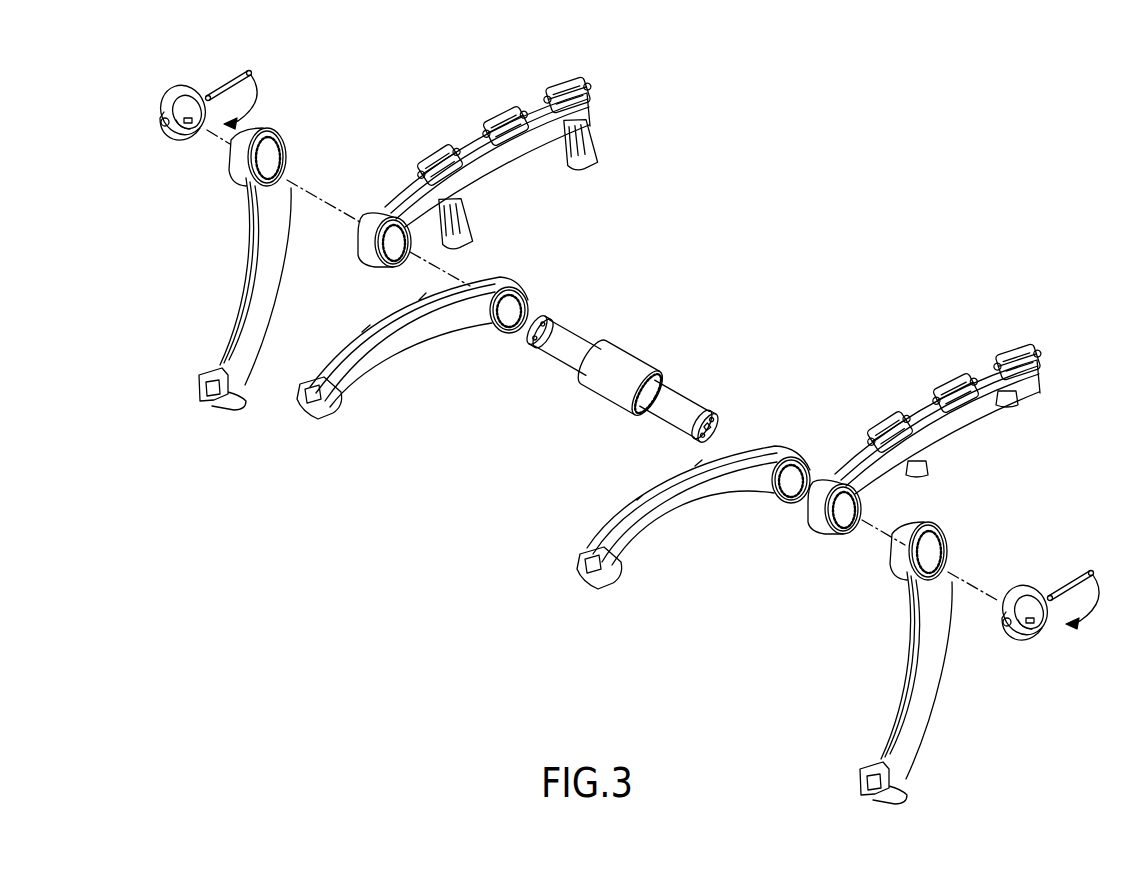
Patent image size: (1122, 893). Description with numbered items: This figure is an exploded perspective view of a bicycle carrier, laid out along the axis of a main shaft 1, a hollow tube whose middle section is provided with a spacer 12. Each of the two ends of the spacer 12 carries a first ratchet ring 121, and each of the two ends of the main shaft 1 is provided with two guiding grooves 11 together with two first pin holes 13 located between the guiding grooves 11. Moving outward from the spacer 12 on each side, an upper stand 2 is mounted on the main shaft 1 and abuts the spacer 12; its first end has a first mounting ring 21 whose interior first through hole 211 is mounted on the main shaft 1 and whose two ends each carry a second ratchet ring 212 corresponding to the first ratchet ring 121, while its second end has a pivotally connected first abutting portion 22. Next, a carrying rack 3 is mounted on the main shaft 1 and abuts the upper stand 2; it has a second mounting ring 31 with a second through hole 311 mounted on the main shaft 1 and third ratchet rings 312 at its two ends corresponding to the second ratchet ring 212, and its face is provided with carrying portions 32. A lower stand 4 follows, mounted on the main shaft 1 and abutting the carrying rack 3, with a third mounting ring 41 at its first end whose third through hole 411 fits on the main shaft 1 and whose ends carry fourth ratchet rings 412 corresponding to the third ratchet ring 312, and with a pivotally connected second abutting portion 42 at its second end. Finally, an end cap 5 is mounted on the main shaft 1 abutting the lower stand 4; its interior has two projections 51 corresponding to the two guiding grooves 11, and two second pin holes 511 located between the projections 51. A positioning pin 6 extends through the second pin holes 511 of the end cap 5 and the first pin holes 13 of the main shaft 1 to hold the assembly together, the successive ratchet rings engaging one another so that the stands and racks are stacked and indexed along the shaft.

The main shaft 1 is at (648, 383).
The guiding grooves 11 is at (548, 316).
The spacer 12 is at (622, 347).
The first ratchet ring 121 is at (661, 372).
The first pin holes 13 is at (531, 342).
The upper stand 2 is at (392, 345).
The first mounting ring 21 is at (505, 286).
The first through hole 211 is at (523, 290).
The second ratchet ring 212 is at (494, 332).
The first abutting portion 22 is at (333, 413).
The carrying rack 3 is at (470, 144).
The second mounting ring 31 is at (367, 250).
The second through hole 311 is at (367, 230).
The third ratchet ring 312 is at (390, 262).
The carrying portion 32 is at (497, 117).
The lower stand 4 is at (246, 289).
The third mounting ring 41 is at (267, 137).
The third through hole 411 is at (282, 150).
The fourth ratchet ring 412 is at (276, 155).
The second abutting portion 42 is at (200, 392).
The end cap 5 is at (163, 98).
The projections 51 is at (187, 124).
The second pin holes 511 is at (160, 128).
The positioning pin 6 is at (227, 82).